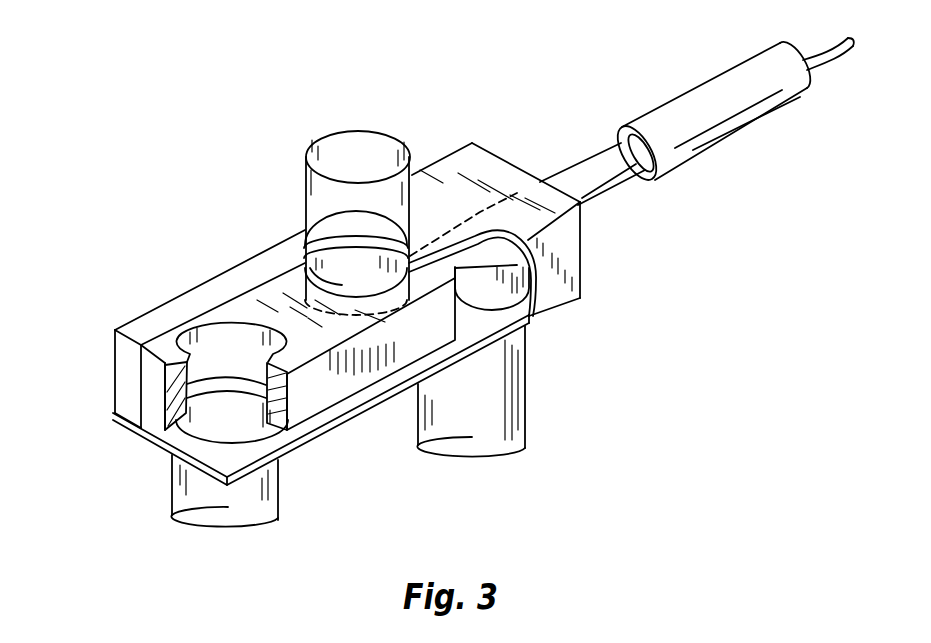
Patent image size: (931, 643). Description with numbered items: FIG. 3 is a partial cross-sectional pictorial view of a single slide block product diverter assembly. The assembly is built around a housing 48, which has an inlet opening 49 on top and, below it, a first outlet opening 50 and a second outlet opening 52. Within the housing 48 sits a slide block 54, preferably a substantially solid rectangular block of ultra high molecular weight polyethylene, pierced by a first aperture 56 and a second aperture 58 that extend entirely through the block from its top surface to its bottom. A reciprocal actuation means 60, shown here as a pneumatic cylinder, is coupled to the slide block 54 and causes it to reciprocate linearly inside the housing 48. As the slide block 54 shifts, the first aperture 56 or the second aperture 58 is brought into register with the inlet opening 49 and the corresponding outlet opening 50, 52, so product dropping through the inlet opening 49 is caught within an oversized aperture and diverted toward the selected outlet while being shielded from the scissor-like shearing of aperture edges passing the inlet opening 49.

The housing 48 is at (478, 170).
The inlet opening 49 is at (303, 235).
The first outlet opening 50 is at (163, 410).
The second outlet opening 52 is at (528, 317).
The slide block 54 is at (300, 406).
The first aperture 56 is at (228, 342).
The second aperture 58 is at (303, 263).
The reciprocal actuation means 60 is at (735, 84).